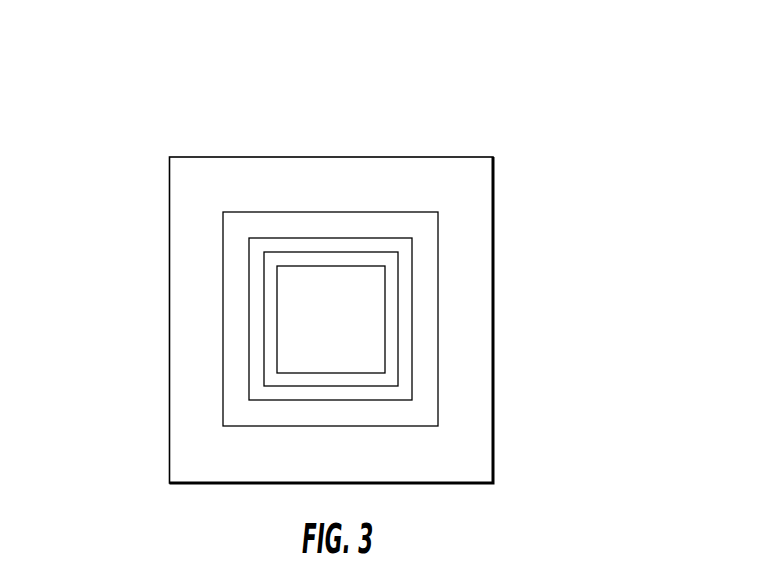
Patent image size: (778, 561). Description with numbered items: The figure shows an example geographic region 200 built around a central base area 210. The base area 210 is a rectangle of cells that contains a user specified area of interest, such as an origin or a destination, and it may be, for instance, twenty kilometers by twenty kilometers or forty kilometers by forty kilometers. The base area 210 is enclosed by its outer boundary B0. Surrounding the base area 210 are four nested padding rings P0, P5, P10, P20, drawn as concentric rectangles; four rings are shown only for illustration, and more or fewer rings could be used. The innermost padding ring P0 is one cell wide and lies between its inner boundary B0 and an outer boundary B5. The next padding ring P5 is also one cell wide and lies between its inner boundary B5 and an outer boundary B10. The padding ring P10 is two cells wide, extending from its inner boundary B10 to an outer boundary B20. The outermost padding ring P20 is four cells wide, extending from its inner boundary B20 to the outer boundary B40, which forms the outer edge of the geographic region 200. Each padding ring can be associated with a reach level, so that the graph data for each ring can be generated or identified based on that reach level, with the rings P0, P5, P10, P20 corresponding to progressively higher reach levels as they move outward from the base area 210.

The geographic region 200 is at (565, 157).
The base area 210 is at (313, 359).
The outer boundary of P20 padding ring B40 is at (169, 213).
The boundary between P10 and P20 padding rings B20 is at (223, 298).
The boundary between P5 and P10 padding rings B10 is at (312, 237).
The boundary between P0 and P5 padding rings B5 is at (398, 379).
The outer boundary of base area B0 is at (385, 348).
The P20 padding ring P20 is at (295, 303).
The P10 padding ring P10 is at (427, 228).
The P5 padding ring P5 is at (407, 249).
The P0 padding ring P0 is at (393, 268).